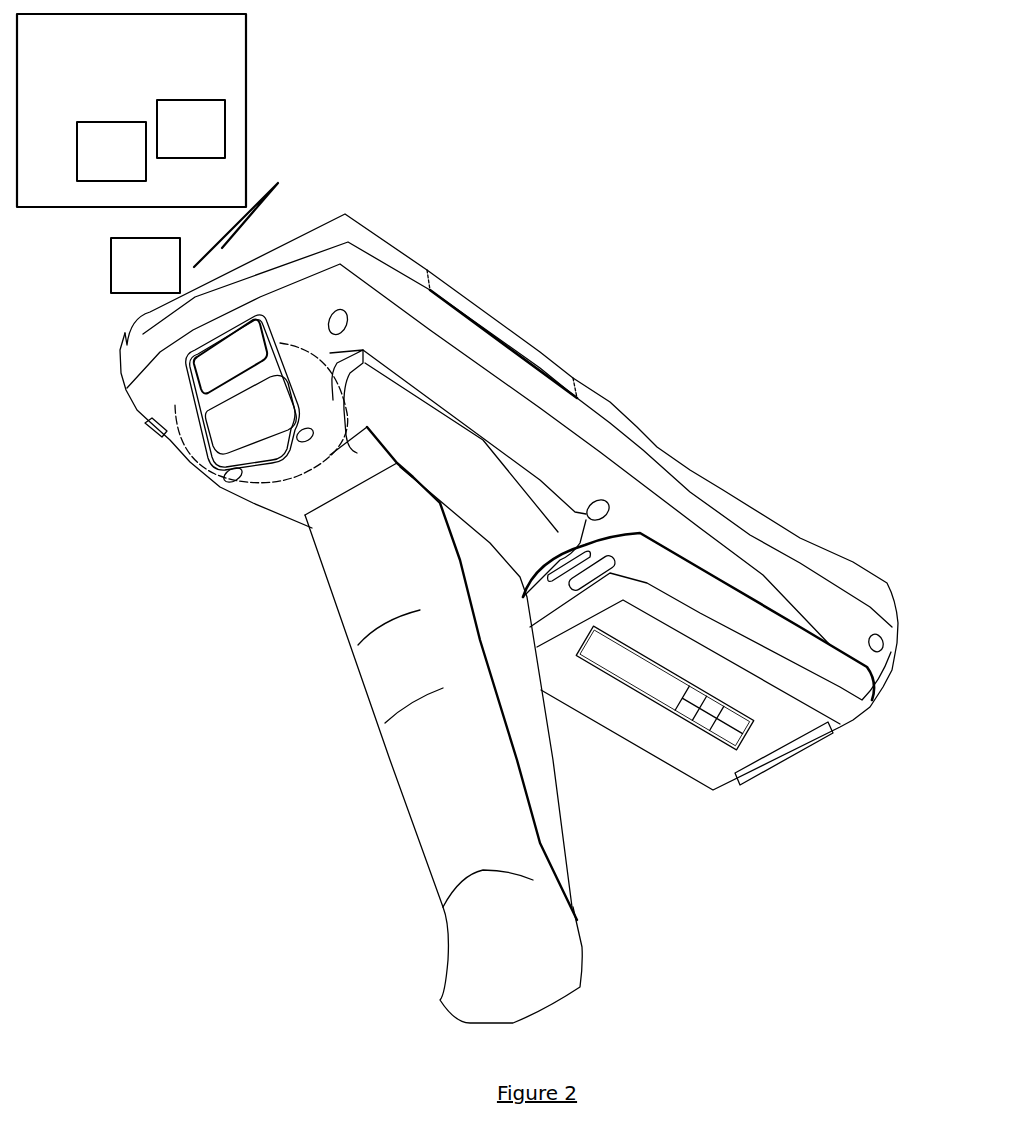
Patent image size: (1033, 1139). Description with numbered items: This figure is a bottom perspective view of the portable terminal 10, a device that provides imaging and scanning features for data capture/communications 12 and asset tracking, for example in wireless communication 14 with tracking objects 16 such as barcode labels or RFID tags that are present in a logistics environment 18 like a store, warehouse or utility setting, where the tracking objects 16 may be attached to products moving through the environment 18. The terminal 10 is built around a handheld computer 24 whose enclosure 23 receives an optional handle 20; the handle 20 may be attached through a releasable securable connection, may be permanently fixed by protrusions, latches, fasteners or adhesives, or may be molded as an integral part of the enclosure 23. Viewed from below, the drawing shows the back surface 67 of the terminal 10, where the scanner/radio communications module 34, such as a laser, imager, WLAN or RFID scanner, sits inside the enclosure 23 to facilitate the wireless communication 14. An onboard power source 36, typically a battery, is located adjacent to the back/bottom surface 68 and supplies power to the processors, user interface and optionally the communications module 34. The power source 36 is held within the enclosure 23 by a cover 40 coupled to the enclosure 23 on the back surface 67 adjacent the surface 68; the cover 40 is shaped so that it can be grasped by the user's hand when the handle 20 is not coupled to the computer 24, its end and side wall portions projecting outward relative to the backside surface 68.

The portable terminal 10 is at (706, 128).
The data capture/communications 12 is at (145, 265).
The wireless communication 14 is at (254, 218).
The tracking objects 16 is at (233, 357).
The logistics environment 18 is at (131, 110).
The handle 20 is at (395, 828).
The enclosure 23 is at (557, 450).
The handheld computer 24 is at (728, 470).
The scanner/radio communications module 34 is at (266, 463).
The onboard power source 36 is at (727, 757).
The cover 40 is at (748, 700).
The back surface 67 is at (467, 390).
The back/bottom surface 68 is at (763, 585).